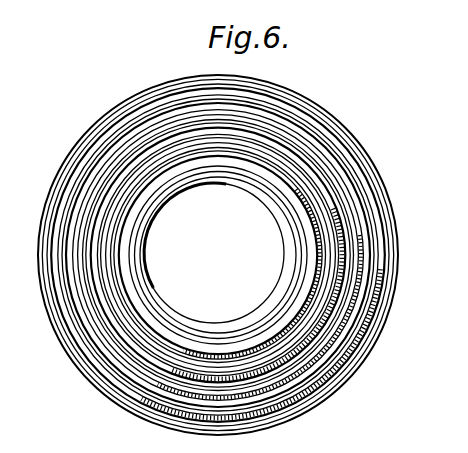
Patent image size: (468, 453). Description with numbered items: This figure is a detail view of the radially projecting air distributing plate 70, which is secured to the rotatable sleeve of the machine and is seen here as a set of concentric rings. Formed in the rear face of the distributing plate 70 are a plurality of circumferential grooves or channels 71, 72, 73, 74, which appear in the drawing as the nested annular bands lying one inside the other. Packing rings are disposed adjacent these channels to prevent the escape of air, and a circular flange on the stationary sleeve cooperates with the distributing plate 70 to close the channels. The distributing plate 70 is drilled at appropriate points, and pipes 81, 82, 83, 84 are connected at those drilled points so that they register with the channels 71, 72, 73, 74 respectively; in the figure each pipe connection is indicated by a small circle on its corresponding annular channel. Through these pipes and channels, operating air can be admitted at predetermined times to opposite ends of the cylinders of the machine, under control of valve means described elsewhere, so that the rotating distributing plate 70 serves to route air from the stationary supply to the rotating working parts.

The air distributing plate 70 is at (122, 402).
The circumferential channel 71 is at (103, 275).
The circumferential channel 72 is at (100, 305).
The circumferential channel 73 is at (97, 340).
The circumferential channel 74 is at (93, 362).
The pipe 81 is at (310, 242).
The pipe 82 is at (305, 175).
The pipe 83 is at (311, 340).
The pipe 84 is at (313, 368).